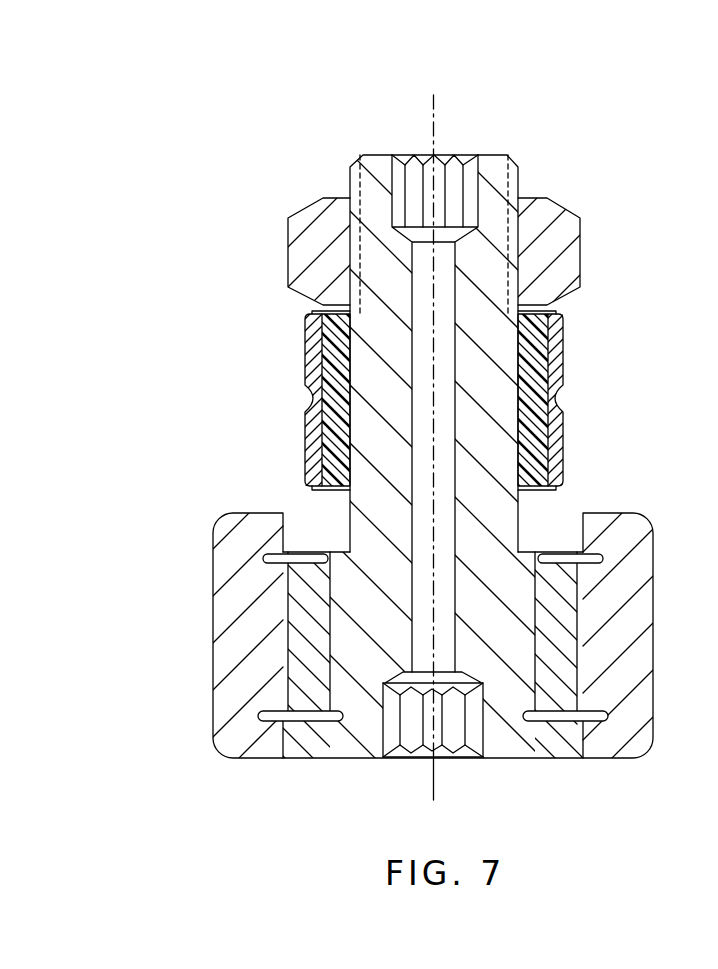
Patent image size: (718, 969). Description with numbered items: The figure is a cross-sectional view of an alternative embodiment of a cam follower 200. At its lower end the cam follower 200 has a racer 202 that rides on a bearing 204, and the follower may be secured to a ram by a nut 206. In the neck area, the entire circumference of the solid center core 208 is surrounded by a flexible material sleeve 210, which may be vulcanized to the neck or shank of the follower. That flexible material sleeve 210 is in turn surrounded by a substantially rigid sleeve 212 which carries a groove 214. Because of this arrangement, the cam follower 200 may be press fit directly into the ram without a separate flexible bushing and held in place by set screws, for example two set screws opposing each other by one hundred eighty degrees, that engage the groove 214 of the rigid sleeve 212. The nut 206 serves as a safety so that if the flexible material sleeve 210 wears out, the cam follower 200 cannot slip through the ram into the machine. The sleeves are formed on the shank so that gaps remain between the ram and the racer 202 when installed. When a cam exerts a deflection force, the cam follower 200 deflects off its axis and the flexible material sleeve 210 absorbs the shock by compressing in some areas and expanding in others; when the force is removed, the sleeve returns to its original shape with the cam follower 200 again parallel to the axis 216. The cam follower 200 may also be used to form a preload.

The cam follower 200 is at (316, 140).
The racer 202 is at (213, 643).
The bearing 204 is at (300, 650).
The nut 206 is at (537, 198).
The solid center core 208 is at (483, 485).
The flexible material sleeve 210 is at (305, 362).
The substantially rigid sleeve 212 is at (563, 338).
The groove 214 is at (556, 405).
The axis 216 is at (432, 773).